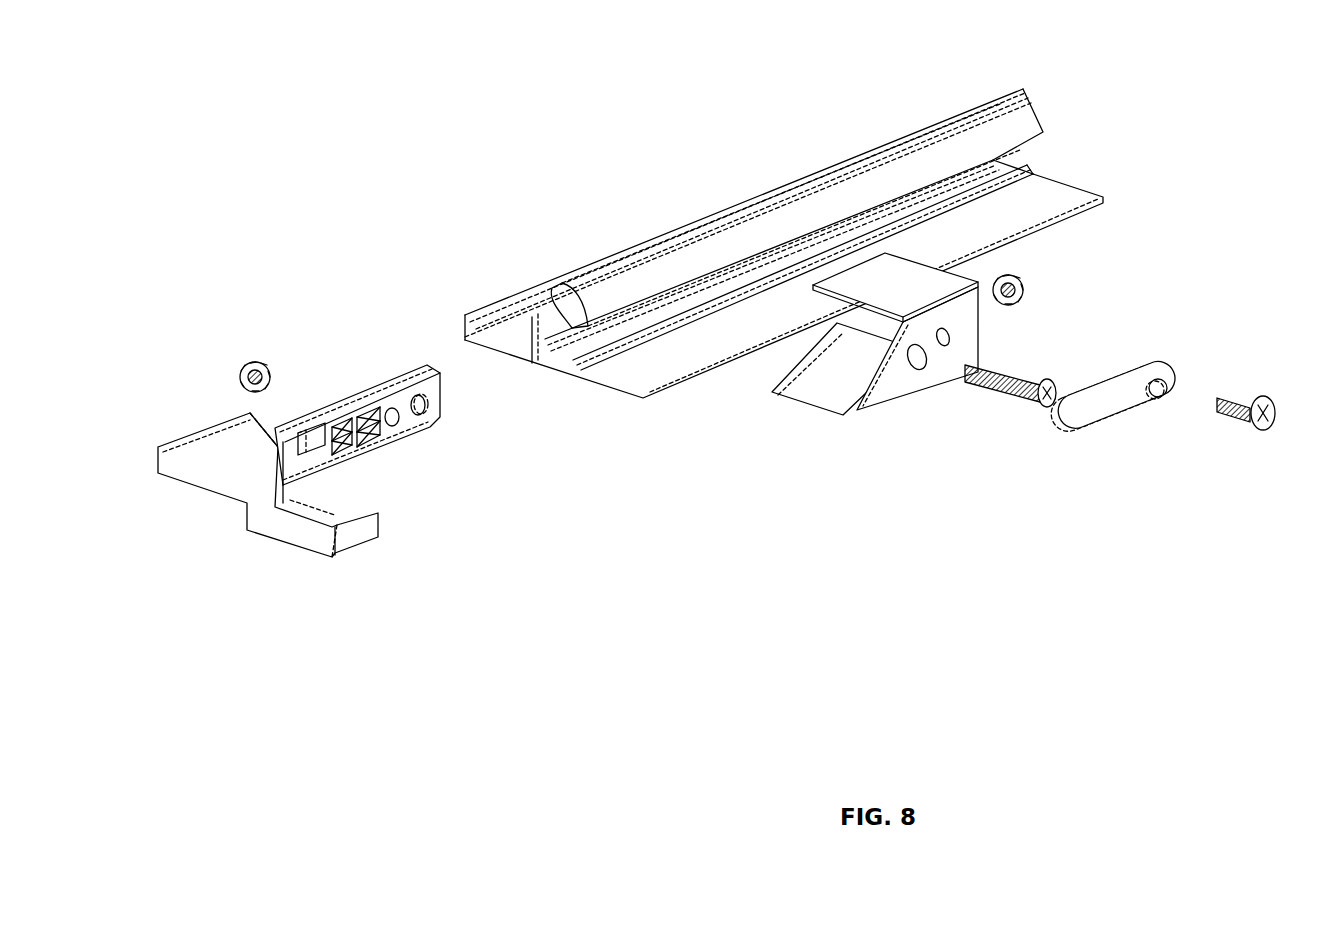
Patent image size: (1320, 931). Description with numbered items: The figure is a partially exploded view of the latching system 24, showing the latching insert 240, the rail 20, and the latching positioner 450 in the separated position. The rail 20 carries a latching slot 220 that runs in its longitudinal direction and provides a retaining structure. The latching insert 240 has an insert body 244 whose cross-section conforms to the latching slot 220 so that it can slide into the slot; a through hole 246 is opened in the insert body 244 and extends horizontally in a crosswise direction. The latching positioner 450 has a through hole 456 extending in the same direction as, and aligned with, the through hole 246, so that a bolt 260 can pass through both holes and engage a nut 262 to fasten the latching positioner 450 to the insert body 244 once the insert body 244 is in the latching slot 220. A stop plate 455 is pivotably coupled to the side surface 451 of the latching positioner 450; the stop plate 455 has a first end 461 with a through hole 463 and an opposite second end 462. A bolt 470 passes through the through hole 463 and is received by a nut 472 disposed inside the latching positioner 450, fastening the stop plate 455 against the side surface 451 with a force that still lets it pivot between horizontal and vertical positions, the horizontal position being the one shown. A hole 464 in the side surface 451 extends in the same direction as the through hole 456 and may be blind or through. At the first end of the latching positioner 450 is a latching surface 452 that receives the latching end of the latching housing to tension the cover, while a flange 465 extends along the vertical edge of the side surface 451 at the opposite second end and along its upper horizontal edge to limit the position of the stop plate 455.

The rail 20 is at (1057, 193).
The latching system 24 is at (492, 96).
The latching slot 220 is at (538, 323).
The latching insert 240 is at (299, 435).
The insert body 244 is at (357, 404).
The through hole 246 is at (395, 412).
The bolt 260 is at (997, 390).
The nut 262 is at (251, 358).
The latching positioner 450 is at (890, 390).
The side surface 451 is at (963, 397).
The latching surface 452 is at (860, 328).
The stop plate 455 is at (1175, 413).
The through hole 456 is at (917, 367).
The first end 461 is at (1177, 377).
The second end 462 is at (1088, 425).
The through hole 463 is at (1153, 387).
The hole 464 is at (946, 333).
The flange 465 is at (967, 293).
The bolt 470 is at (1262, 435).
The nut 472 is at (1022, 275).